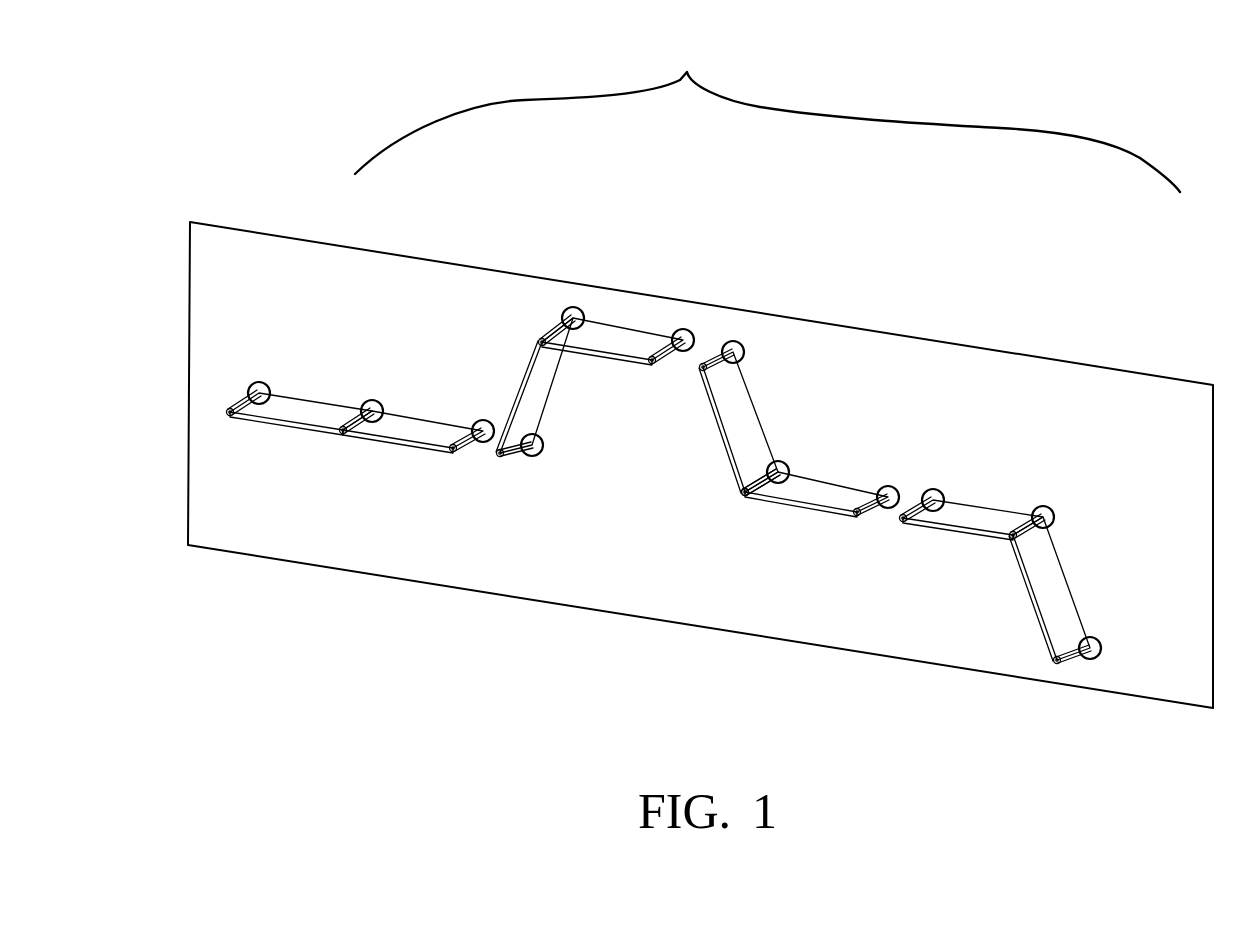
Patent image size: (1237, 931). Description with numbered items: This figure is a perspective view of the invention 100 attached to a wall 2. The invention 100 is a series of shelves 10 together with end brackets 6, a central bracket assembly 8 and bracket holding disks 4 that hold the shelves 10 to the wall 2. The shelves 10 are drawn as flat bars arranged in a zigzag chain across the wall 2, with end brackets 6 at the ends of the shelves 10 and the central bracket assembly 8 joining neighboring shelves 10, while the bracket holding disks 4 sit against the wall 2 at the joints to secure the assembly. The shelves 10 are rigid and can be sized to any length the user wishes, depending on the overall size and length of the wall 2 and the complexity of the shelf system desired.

The invention 100 is at (690, 66).
The wall 2 is at (963, 377).
The bracket holding disks 4 is at (735, 333).
The end brackets 6 is at (713, 357).
The central bracket assembly 8 is at (768, 467).
The shelves 10 is at (812, 485).